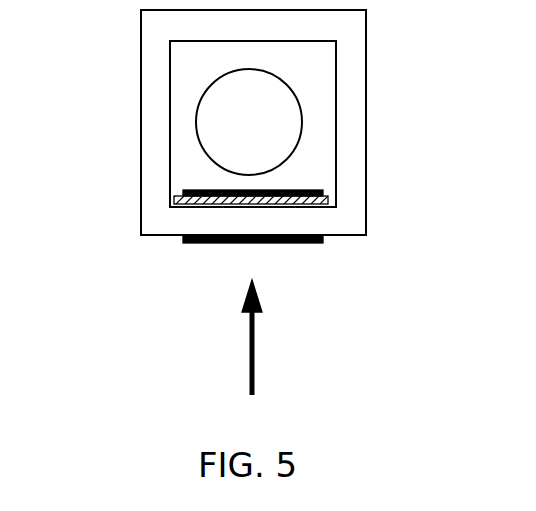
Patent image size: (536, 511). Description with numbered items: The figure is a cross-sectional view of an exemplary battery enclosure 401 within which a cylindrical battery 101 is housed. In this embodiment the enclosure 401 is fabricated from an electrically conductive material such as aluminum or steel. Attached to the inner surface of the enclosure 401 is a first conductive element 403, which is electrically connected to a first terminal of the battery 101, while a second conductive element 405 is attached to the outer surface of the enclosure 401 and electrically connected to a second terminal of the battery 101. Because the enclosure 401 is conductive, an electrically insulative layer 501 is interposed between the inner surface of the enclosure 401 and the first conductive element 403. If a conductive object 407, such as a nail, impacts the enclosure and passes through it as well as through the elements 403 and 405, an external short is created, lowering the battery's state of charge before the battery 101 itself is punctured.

The cylindrical battery 101 is at (272, 132).
The battery enclosure 401 is at (157, 86).
The first conductive element 403 is at (302, 191).
The second conductive element 405 is at (305, 242).
The conductive object 407 is at (250, 348).
The electrically insulative layer 501 is at (173, 199).